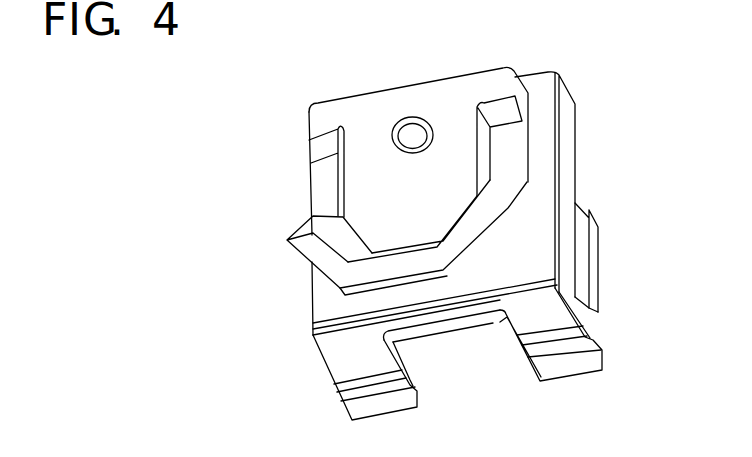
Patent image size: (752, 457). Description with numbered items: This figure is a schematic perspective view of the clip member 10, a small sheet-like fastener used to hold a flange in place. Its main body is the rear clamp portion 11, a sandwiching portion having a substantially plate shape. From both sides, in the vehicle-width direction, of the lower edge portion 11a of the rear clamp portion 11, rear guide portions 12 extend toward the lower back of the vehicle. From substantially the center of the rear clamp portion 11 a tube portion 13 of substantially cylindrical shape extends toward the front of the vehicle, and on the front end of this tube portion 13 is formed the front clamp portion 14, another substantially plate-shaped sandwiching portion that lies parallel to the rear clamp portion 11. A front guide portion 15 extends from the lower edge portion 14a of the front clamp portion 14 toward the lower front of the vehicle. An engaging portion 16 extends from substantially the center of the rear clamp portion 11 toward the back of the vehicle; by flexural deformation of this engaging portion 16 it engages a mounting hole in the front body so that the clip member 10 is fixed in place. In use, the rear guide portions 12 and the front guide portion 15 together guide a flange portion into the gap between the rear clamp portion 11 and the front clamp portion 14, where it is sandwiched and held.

The clip member 10 is at (397, 88).
The rear clamp portion 11 is at (538, 240).
The lower edge portion 11a is at (585, 312).
The rear guide portions 12 is at (344, 358).
The tube portion 13 is at (410, 126).
The front clamp portion 14 is at (365, 127).
The lower edge portion 14a is at (322, 214).
The front guide portion 15 is at (507, 216).
The engaging portion 16 is at (600, 284).